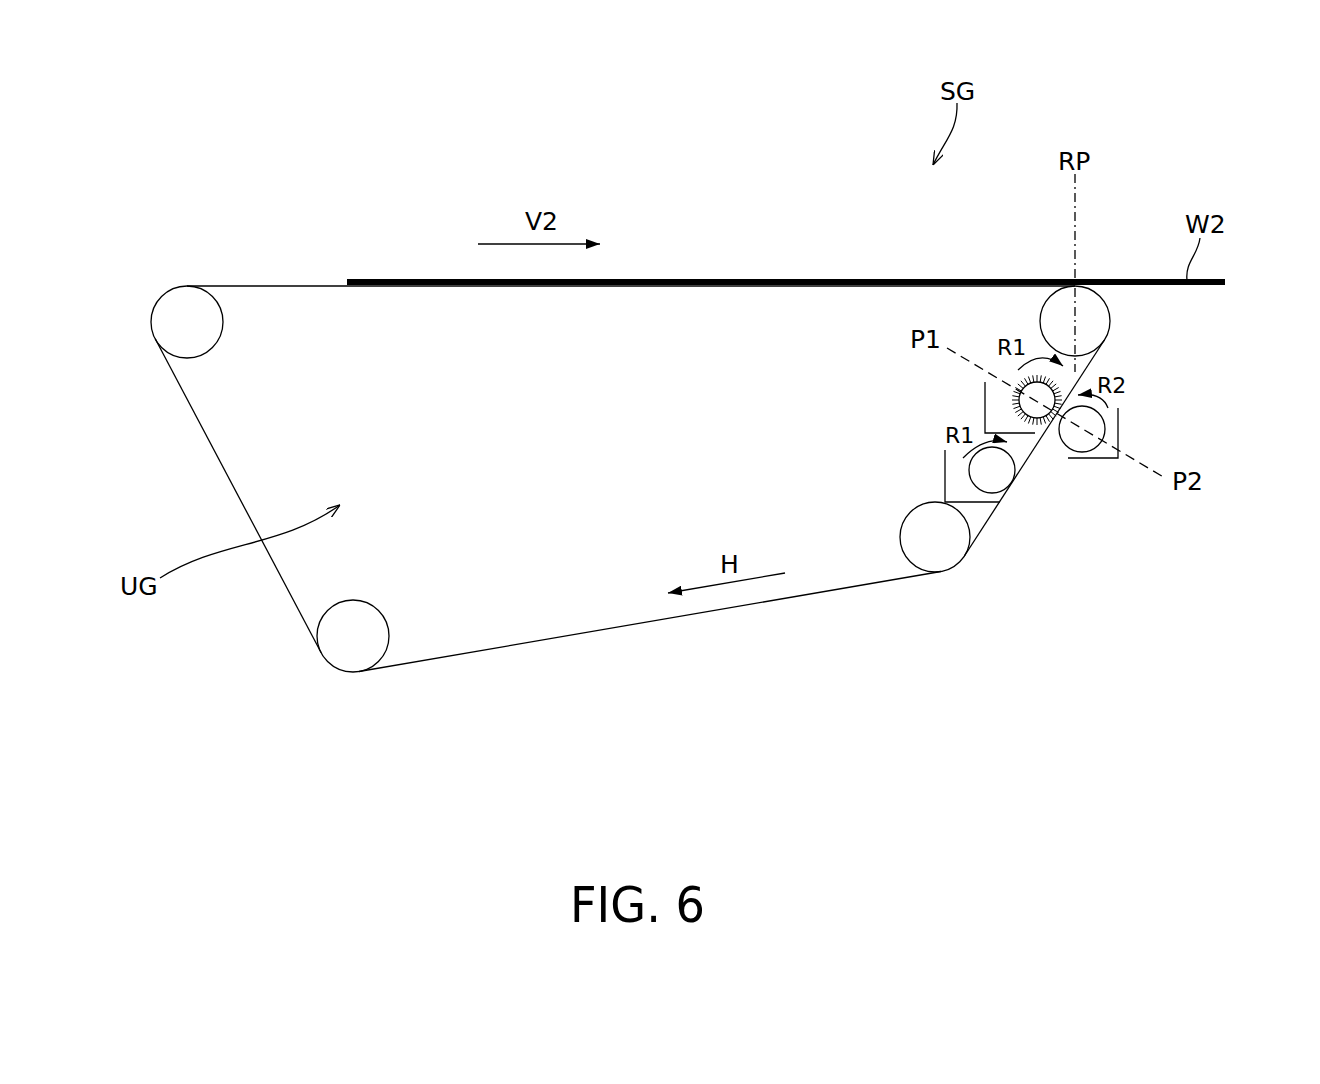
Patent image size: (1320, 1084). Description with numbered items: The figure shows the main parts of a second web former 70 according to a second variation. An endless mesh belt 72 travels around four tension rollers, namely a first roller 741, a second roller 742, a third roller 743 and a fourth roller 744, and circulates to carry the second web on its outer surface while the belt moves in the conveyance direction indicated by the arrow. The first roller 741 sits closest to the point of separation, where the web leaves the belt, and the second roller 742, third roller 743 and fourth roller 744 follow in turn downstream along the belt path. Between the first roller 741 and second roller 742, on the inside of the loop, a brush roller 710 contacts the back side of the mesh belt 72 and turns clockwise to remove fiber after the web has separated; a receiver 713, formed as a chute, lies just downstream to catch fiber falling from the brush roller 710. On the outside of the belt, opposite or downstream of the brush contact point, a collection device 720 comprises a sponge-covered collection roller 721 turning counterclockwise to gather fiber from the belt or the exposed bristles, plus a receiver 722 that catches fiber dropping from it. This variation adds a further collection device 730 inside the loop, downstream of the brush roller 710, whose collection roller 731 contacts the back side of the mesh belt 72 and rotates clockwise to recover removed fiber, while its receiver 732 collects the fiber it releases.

The second web former 70 is at (679, 543).
The mesh belt 72 is at (587, 632).
The brush roller 710 is at (947, 401).
The receiver 713 is at (1018, 403).
The collection device 720 is at (1174, 480).
The collection roller 721 is at (1085, 443).
The receiver 722 is at (1120, 433).
The collection device 730 is at (885, 475).
The collection roller 731 is at (983, 468).
The receiver 732 is at (943, 477).
The first roller 741 is at (1085, 332).
The second roller 742 is at (935, 548).
The third roller 743 is at (353, 637).
The fourth roller 744 is at (195, 358).